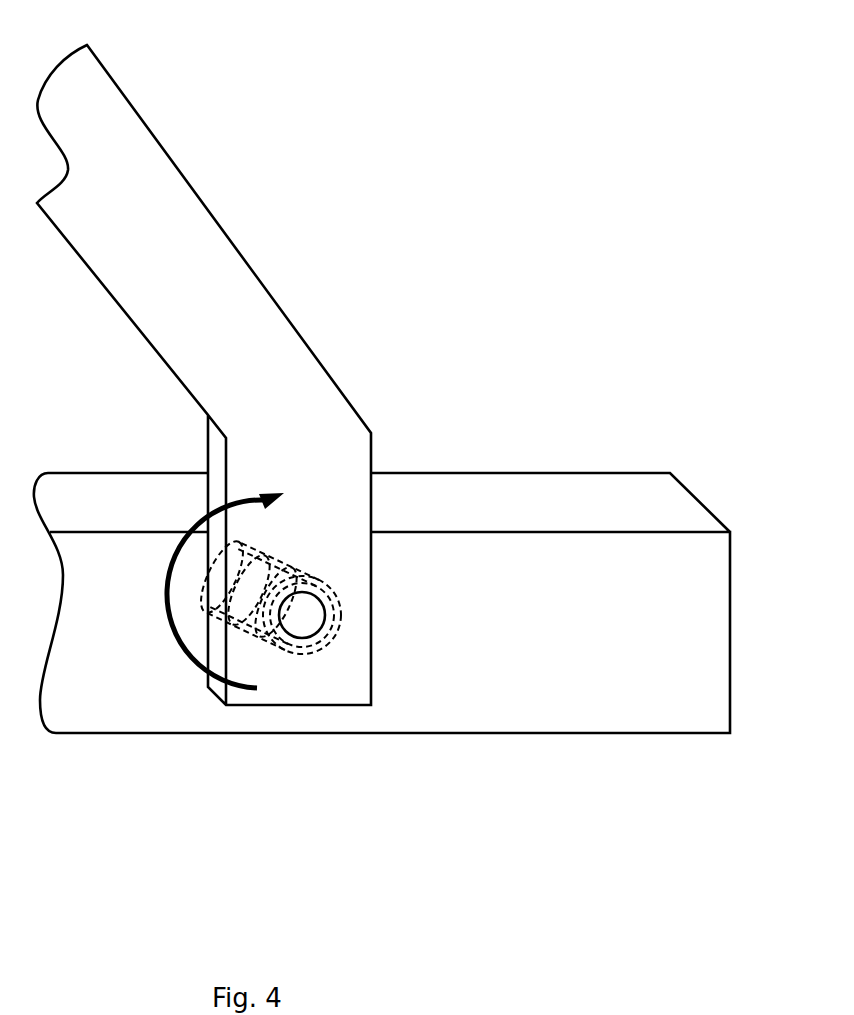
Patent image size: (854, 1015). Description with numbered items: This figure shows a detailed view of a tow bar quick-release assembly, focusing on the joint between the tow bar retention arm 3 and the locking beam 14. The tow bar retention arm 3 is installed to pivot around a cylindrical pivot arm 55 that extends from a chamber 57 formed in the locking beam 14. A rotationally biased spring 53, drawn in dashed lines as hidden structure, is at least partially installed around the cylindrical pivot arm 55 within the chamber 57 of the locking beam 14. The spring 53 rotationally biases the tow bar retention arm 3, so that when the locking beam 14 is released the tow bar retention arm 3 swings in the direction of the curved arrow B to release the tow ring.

The tow bar retention arm 3 is at (155, 222).
The locking beam 14 is at (490, 647).
The rotationally biased spring 53 is at (235, 602).
The cylindrical pivot arm 55 is at (302, 615).
The chamber 57 is at (312, 643).
The arrow B is at (197, 643).